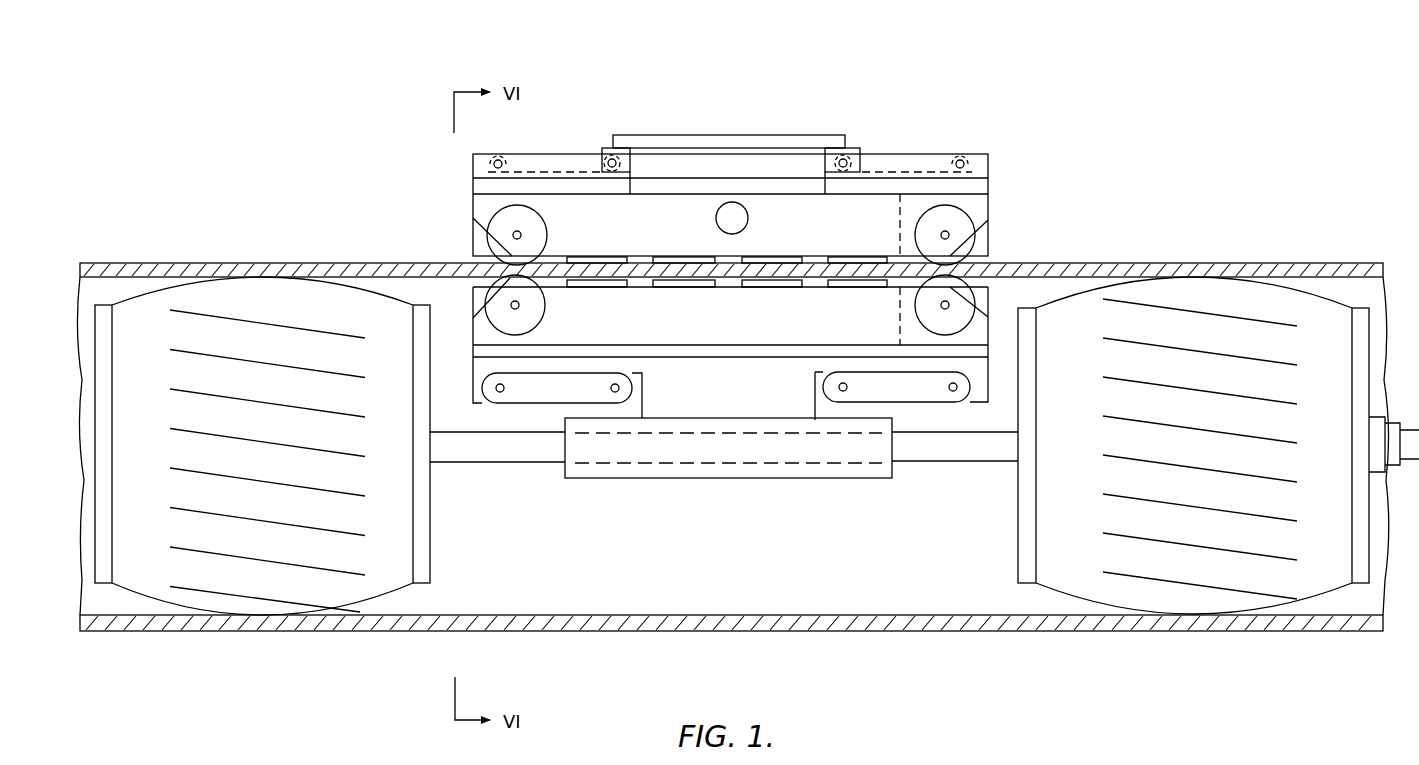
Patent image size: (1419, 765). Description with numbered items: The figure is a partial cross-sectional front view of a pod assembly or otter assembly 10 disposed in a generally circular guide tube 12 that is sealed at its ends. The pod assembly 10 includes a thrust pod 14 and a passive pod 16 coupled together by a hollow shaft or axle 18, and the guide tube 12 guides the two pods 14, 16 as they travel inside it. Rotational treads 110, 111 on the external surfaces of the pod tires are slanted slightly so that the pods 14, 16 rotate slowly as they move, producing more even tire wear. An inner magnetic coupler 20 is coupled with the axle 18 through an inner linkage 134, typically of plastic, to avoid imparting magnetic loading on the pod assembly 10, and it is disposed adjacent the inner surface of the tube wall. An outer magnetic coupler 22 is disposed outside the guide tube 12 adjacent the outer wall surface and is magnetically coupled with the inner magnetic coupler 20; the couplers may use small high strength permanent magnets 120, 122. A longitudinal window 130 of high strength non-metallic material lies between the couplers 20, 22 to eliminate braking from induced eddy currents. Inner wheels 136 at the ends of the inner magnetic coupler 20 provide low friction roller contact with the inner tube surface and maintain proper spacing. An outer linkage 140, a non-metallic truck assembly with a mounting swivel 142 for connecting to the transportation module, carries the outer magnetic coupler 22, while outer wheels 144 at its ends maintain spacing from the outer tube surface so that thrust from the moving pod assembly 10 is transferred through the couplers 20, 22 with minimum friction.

The pod assembly 10 is at (1358, 232).
The guide tube 12 is at (123, 262).
The thrust pod 14 is at (262, 446).
The passive pod 16 is at (1193, 445).
The hollow shaft or axle 18 is at (503, 463).
The inner magnetic coupler 20 is at (727, 308).
The outer magnetic coupler 22 is at (734, 232).
The rotational tread 110 is at (178, 470).
The rotational tread 111 is at (1105, 343).
The permanent magnets 120 is at (790, 288).
The permanent magnets 122 is at (795, 257).
The longitudinal window 130 is at (737, 265).
The inner linkage 134 is at (759, 352).
The inner wheels 136 is at (972, 298).
The outer linkage 140 is at (768, 183).
The mounting swivel 142 is at (826, 135).
The outer wheels 144 is at (967, 247).